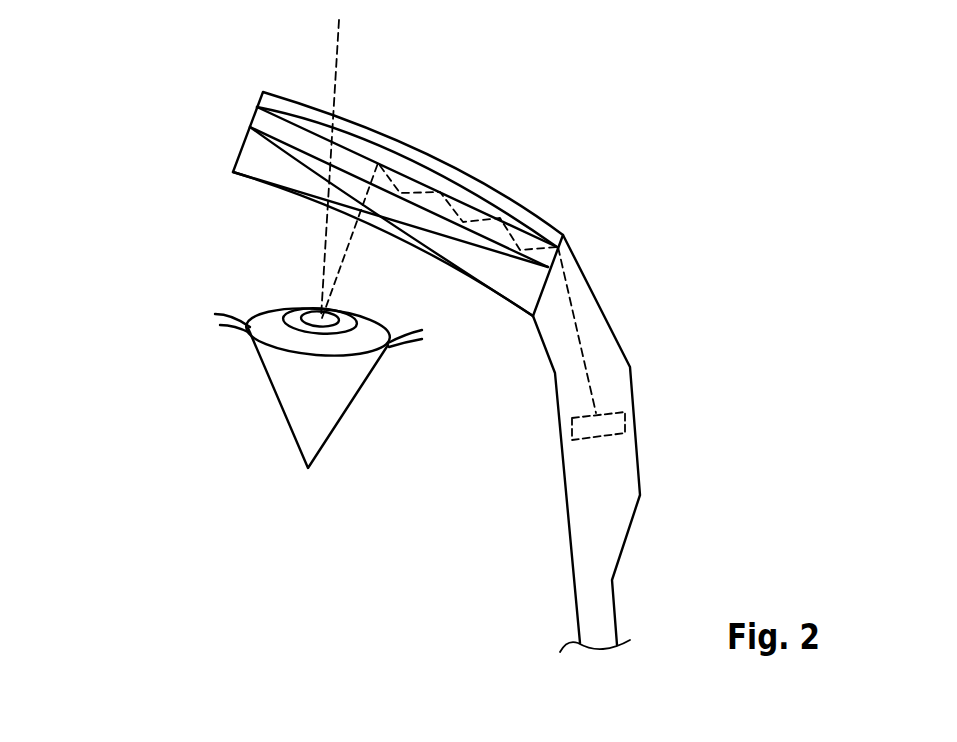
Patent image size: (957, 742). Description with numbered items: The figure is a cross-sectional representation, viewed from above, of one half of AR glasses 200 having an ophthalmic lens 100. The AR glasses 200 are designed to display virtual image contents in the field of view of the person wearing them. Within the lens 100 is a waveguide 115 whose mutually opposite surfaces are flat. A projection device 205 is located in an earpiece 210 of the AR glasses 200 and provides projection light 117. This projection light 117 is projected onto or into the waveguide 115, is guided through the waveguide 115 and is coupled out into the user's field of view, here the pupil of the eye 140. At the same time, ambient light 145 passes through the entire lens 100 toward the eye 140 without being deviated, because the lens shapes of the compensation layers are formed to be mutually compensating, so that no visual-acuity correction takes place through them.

The ophthalmic lens 100 is at (358, 180).
The waveguide 115 is at (284, 131).
The projection light 117 is at (573, 315).
The eye 140 is at (298, 400).
The ambient light 145 is at (339, 44).
The AR glasses 200 is at (617, 343).
The projection device 205 is at (630, 420).
The earpiece 210 is at (617, 612).